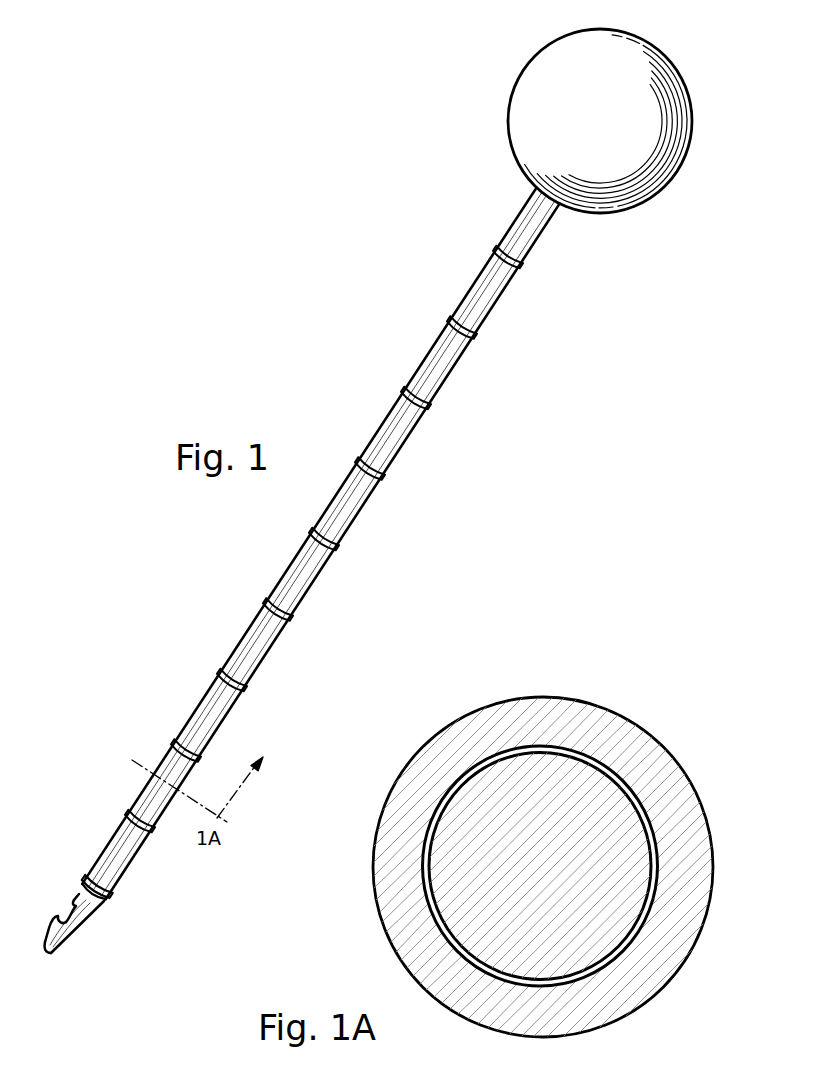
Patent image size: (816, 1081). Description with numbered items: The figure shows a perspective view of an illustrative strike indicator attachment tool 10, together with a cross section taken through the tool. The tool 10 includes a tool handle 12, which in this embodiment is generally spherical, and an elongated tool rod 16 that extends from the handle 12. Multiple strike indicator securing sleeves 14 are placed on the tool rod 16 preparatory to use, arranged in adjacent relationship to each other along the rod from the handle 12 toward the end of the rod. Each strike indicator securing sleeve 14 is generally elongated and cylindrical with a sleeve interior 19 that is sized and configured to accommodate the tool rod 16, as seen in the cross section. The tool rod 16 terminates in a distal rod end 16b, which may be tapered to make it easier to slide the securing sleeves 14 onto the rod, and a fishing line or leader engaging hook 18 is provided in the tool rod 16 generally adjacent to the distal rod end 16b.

In FIG. 1, the strike indicator attachment tool 10 is at (472, 506).
In FIG. 1, the tool handle 12 is at (597, 212).
In FIG. 1, the strike indicator securing sleeve 14 is at (410, 428).
In FIG. 1A, the strike indicator securing sleeve 14 is at (573, 698).
In FIG. 1, the tool rod 16 is at (98, 903).
In FIG. 1A, the tool rod 16 is at (588, 780).
In FIG. 1, the fishing line or leader engaging hook 18 is at (73, 910).
In FIG. 1, the distal rod end 16b is at (50, 955).
In FIG. 1A, the sleeve interior 19 is at (660, 826).